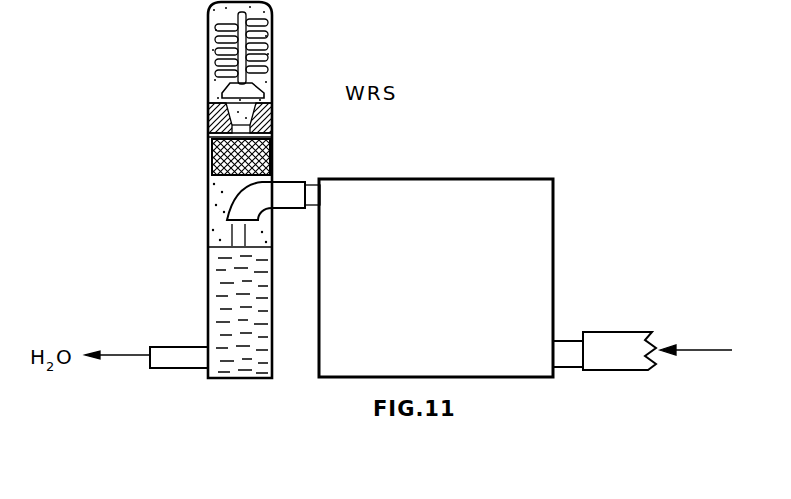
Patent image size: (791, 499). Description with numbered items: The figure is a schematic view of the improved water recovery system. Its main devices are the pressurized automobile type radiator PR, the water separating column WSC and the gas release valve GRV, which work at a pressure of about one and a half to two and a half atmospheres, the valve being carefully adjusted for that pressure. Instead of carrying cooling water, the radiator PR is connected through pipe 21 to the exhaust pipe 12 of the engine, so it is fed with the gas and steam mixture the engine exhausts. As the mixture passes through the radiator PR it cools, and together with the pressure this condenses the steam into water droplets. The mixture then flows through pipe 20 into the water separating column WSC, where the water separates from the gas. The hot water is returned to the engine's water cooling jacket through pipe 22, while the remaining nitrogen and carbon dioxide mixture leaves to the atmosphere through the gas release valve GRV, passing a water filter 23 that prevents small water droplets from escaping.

The exhaust pipe 12 is at (624, 347).
The pipe 20 is at (266, 192).
The pipe 21 is at (566, 345).
The pipe 22 is at (178, 354).
The water filter 23 is at (215, 163).
The gas release valve GRV is at (259, 90).
The water separating column WSC is at (222, 230).
The pressurized automobile type radiator PR is at (436, 278).